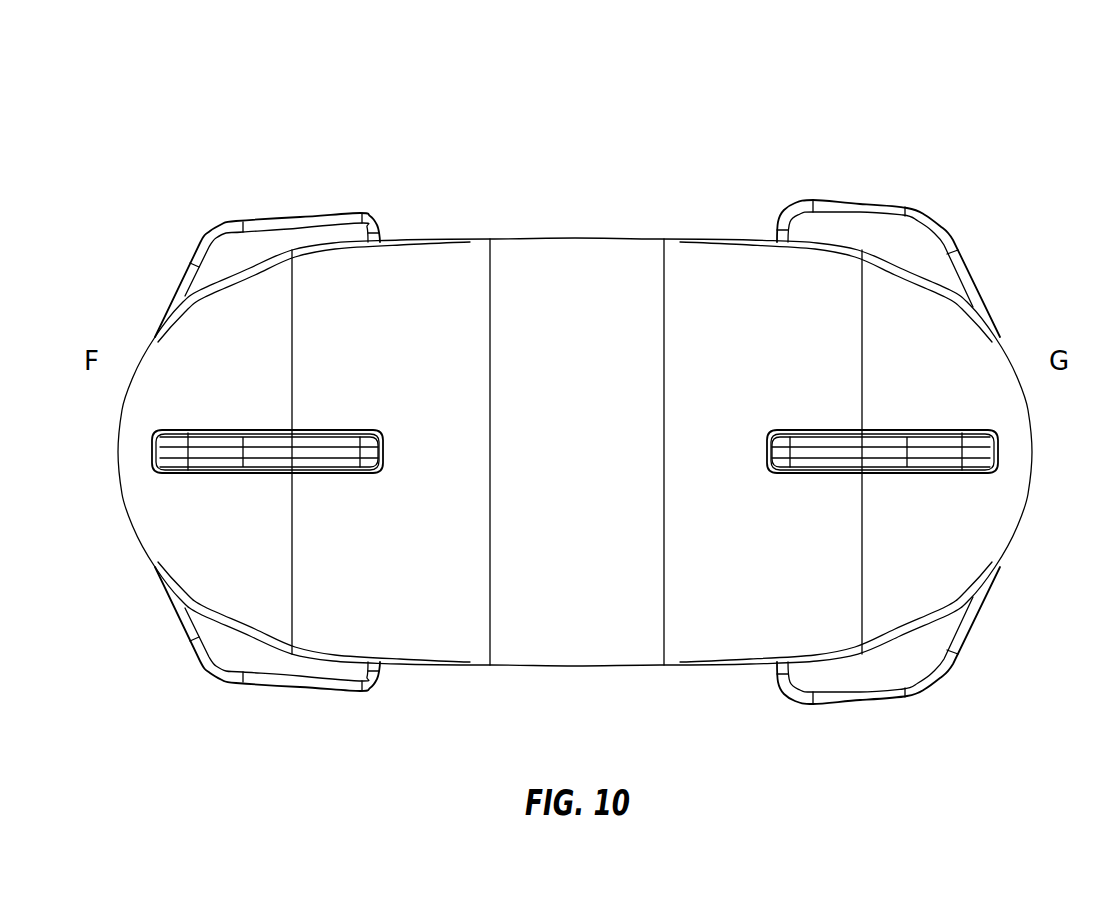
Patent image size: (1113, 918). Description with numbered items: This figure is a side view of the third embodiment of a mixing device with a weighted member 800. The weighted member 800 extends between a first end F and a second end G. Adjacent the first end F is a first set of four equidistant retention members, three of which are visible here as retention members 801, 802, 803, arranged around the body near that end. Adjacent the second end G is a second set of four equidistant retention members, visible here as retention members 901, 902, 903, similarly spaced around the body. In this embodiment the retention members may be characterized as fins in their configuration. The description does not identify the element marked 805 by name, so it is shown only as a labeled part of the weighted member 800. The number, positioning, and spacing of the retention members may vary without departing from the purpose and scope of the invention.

The weighted member 800 is at (580, 403).
The retention member 801 is at (230, 253).
The retention member 802 is at (200, 455).
The retention member 803 is at (230, 651).
The platform body 805 is at (542, 238).
The retention member 901 is at (920, 243).
The retention member 902 is at (957, 452).
The retention member 903 is at (920, 661).